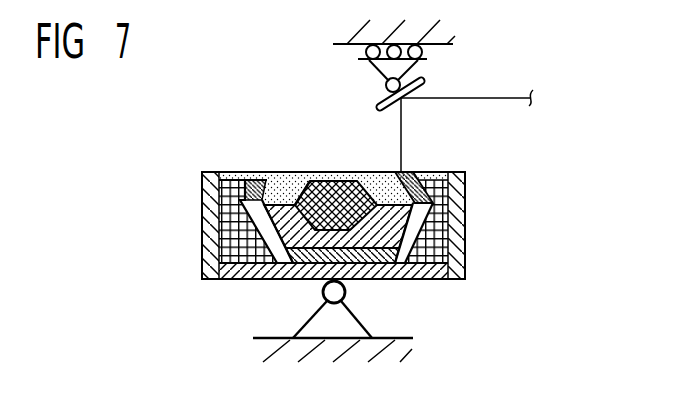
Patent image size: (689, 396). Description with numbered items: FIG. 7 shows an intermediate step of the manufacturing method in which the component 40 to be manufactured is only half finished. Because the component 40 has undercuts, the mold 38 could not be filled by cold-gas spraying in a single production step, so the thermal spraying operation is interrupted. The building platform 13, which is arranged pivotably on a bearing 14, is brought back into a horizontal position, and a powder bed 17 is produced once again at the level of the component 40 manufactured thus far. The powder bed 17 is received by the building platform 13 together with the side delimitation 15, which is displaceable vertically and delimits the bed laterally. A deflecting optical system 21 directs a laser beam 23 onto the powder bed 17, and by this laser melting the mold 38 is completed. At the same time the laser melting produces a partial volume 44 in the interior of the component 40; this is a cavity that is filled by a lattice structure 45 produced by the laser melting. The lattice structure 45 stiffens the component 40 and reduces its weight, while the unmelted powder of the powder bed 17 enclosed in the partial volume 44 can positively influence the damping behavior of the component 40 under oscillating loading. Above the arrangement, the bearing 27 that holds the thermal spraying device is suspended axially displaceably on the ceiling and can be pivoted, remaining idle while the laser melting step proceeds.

The building platform 13 is at (237, 281).
The bearing 14 is at (344, 318).
The side delimitation 15 is at (455, 221).
The powder bed 17 is at (283, 190).
The deflecting optical system 21 is at (421, 79).
The laser beam 23 is at (402, 124).
The bearing 27 is at (378, 71).
The mold 38 is at (422, 166).
The component 40 is at (386, 203).
The partial volume 44 is at (334, 182).
The lattice structure 45 is at (306, 190).